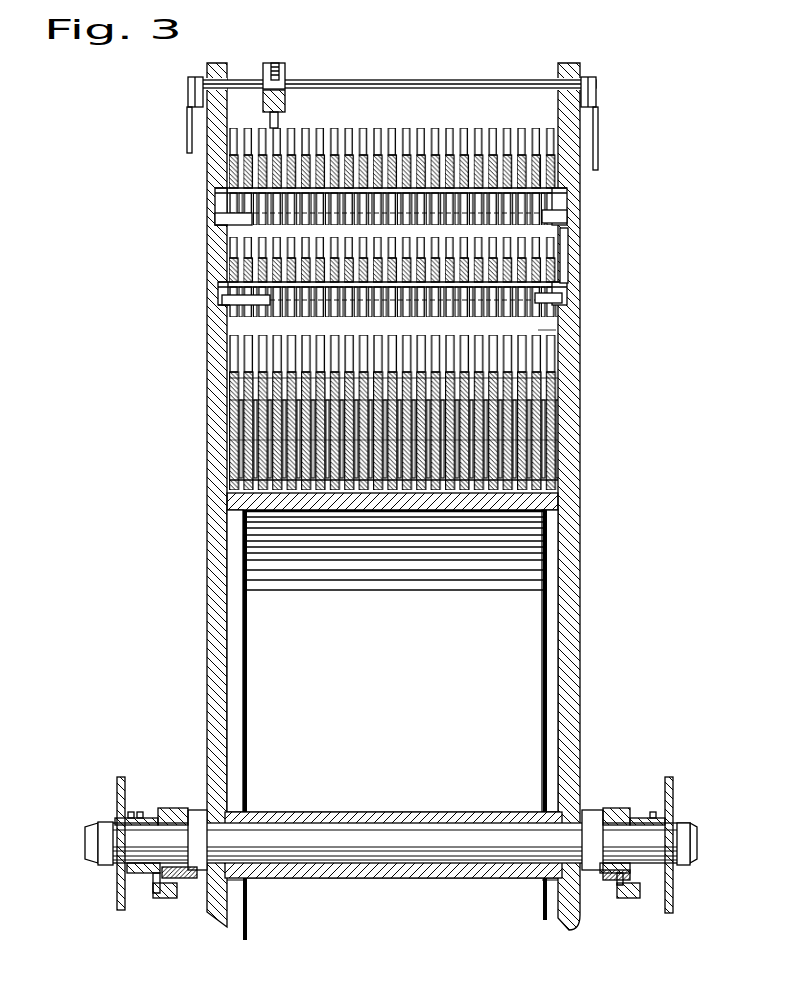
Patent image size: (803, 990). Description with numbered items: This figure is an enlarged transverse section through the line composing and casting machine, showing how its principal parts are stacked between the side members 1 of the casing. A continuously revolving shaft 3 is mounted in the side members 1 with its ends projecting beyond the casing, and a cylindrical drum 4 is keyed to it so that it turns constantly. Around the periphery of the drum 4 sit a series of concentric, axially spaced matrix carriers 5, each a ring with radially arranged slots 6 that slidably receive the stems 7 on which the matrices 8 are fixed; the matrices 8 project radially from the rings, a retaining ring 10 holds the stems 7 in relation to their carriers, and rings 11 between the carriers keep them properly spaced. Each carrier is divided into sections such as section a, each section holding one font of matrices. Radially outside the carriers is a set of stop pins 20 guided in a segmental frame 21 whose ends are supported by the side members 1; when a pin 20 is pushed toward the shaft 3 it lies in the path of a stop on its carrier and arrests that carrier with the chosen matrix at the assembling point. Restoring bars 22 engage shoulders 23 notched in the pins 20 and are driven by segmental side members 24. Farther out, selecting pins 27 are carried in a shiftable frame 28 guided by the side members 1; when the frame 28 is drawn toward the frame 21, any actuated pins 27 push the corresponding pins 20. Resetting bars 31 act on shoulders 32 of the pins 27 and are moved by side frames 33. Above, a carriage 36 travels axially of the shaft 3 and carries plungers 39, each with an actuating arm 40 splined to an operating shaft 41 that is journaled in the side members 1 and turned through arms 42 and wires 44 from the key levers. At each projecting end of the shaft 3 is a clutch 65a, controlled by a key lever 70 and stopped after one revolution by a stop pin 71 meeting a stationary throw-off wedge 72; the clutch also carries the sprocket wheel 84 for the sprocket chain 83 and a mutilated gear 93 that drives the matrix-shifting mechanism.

The side members 1 is at (210, 178).
The continuously revolving shaft 3 is at (88, 850).
The cylindrical drum 4 is at (556, 505).
The matrix carriers 5 is at (223, 422).
The radially arranged slots 6 is at (250, 467).
The stems 7 is at (232, 487).
The matrices 8 is at (233, 360).
The retaining ring 10 is at (538, 389).
The rings 11 is at (553, 483).
The stop pins 20 is at (224, 274).
The segmental frame 21 is at (568, 275).
The restoring bars 22 is at (224, 304).
The shoulders 23 is at (563, 241).
The segmental side members 24 is at (222, 300).
The selecting pins 27 is at (493, 128).
The frame 28 is at (570, 188).
The resetting bars 31 is at (216, 226).
The shoulders 32 is at (543, 173).
The side frames 33 is at (215, 217).
The carriage 36 is at (272, 67).
The plungers 39 is at (280, 122).
The actuating arm 40 is at (287, 76).
The operating shaft 41 is at (440, 82).
The arms 42 is at (190, 96).
The wires 44 is at (187, 133).
The clutch 65a is at (618, 808).
The key lever 70 is at (166, 899).
The stop pin 71 is at (157, 873).
The throw-off wedge 72 is at (153, 893).
The sprocket chain 83 is at (146, 817).
The sprocket wheel 84 is at (140, 807).
The mutilated gear 93 is at (118, 794).
The section a is at (549, 335).